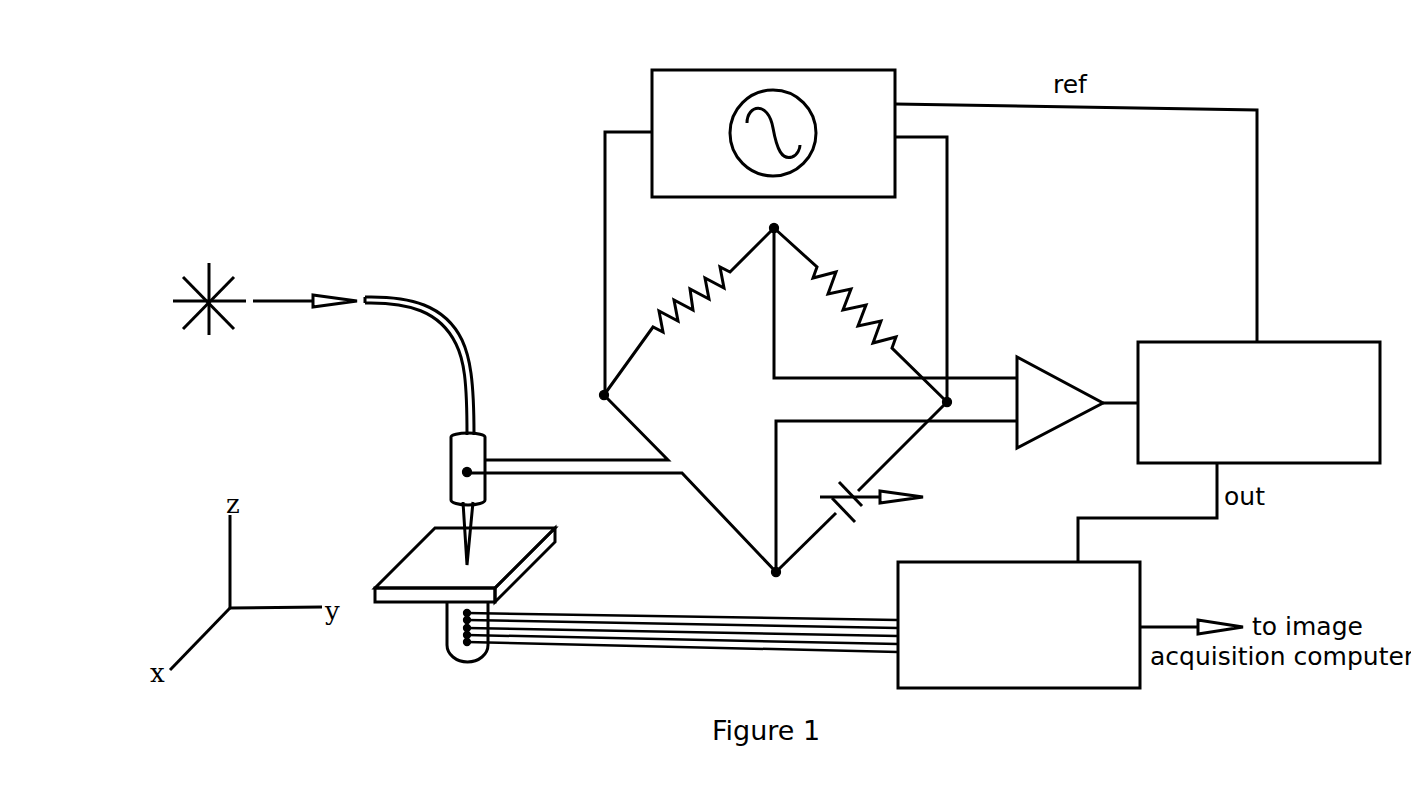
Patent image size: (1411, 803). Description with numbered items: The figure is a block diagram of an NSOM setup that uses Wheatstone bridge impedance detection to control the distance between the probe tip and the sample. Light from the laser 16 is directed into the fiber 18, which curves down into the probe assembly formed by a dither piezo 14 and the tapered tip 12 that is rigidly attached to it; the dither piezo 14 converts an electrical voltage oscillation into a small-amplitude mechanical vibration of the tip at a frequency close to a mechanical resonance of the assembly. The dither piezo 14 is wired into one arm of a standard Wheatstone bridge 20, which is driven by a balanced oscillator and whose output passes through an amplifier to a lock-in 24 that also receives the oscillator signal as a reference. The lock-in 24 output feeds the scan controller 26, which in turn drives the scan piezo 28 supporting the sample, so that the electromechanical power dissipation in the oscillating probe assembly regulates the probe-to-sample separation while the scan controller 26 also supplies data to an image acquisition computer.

The tip 12 is at (478, 557).
The dither piezo 14 is at (450, 462).
The laser 16 is at (210, 327).
The fiber 18 is at (428, 307).
The Wheatstone Bridge 20 is at (812, 262).
The lock-in 24 is at (1259, 402).
The scan controller 26 is at (1019, 625).
The scan piezo 28 is at (478, 655).